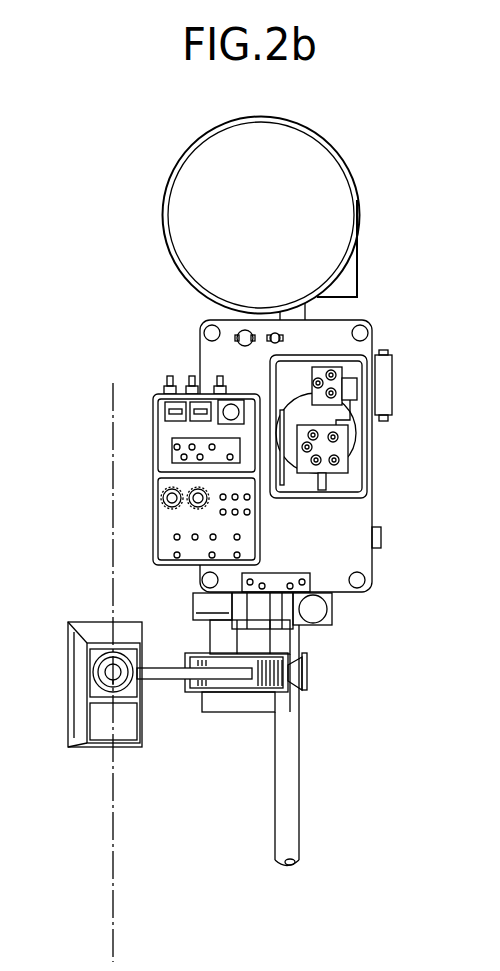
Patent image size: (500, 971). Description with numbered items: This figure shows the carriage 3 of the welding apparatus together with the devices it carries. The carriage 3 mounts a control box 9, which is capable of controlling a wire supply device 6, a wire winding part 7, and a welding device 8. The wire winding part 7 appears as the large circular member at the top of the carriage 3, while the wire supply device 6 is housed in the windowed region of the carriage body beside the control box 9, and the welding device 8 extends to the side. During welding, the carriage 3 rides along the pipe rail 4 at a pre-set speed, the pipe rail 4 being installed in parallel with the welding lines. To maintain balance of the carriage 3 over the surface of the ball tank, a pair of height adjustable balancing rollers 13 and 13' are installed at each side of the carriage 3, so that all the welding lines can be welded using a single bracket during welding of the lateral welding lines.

The carriage 3 is at (380, 496).
The pipe rail 4 is at (295, 783).
The wire supply device 6 is at (343, 388).
The wire winding part 7 is at (360, 198).
The welding device 8 is at (68, 692).
The control box 9 is at (168, 528).
The balancing roller 13 is at (178, 461).
The balancing roller 13' is at (391, 463).